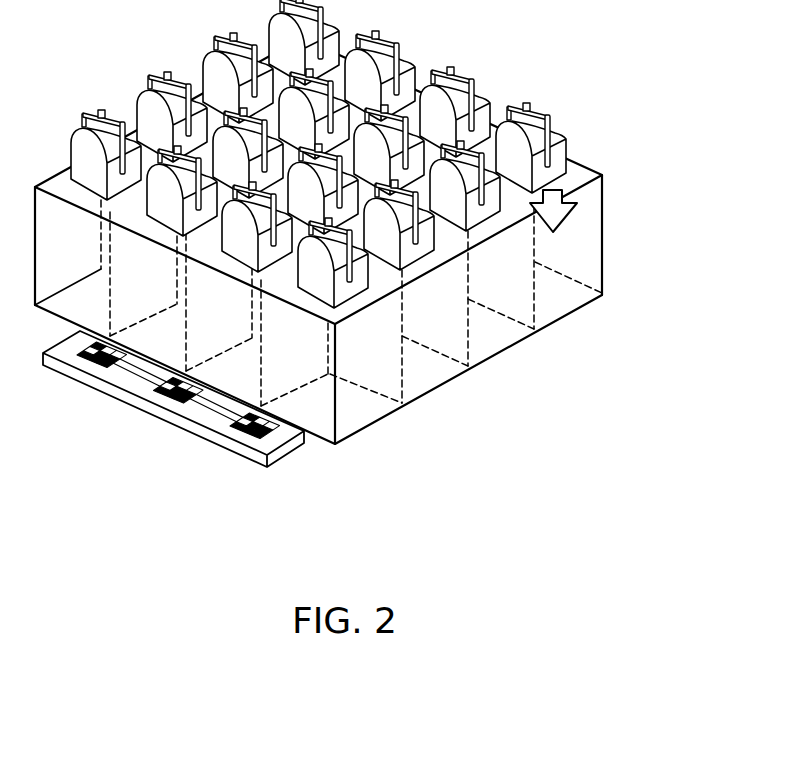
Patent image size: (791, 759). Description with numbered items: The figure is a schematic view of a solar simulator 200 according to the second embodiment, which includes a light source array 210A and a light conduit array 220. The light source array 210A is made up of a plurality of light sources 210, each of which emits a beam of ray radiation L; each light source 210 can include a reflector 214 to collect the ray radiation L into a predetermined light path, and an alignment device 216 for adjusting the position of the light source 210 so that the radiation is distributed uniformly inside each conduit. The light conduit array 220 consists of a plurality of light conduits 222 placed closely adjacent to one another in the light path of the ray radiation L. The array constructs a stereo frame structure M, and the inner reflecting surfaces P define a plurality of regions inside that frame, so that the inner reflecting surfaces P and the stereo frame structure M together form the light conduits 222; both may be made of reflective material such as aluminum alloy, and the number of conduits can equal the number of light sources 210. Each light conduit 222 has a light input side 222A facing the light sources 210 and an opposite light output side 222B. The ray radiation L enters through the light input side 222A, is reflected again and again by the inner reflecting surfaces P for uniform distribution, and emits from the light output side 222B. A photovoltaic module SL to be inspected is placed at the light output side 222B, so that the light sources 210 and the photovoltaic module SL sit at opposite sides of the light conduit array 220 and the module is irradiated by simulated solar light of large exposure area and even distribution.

The solar simulator 200 is at (364, 254).
The light source 210 is at (595, 123).
The light source array 210A is at (600, 110).
The reflector 214 is at (553, 140).
The alignment device 216 is at (551, 120).
The light conduit array 220 is at (341, 271).
The light conduit 222 is at (318, 271).
The light input side 222A is at (357, 318).
The light output side 222B is at (363, 434).
The ray radiation L is at (568, 222).
The stereo frame structure M is at (211, 268).
The photovoltaic module SL is at (213, 437).
The inner reflecting surface P is at (268, 296).